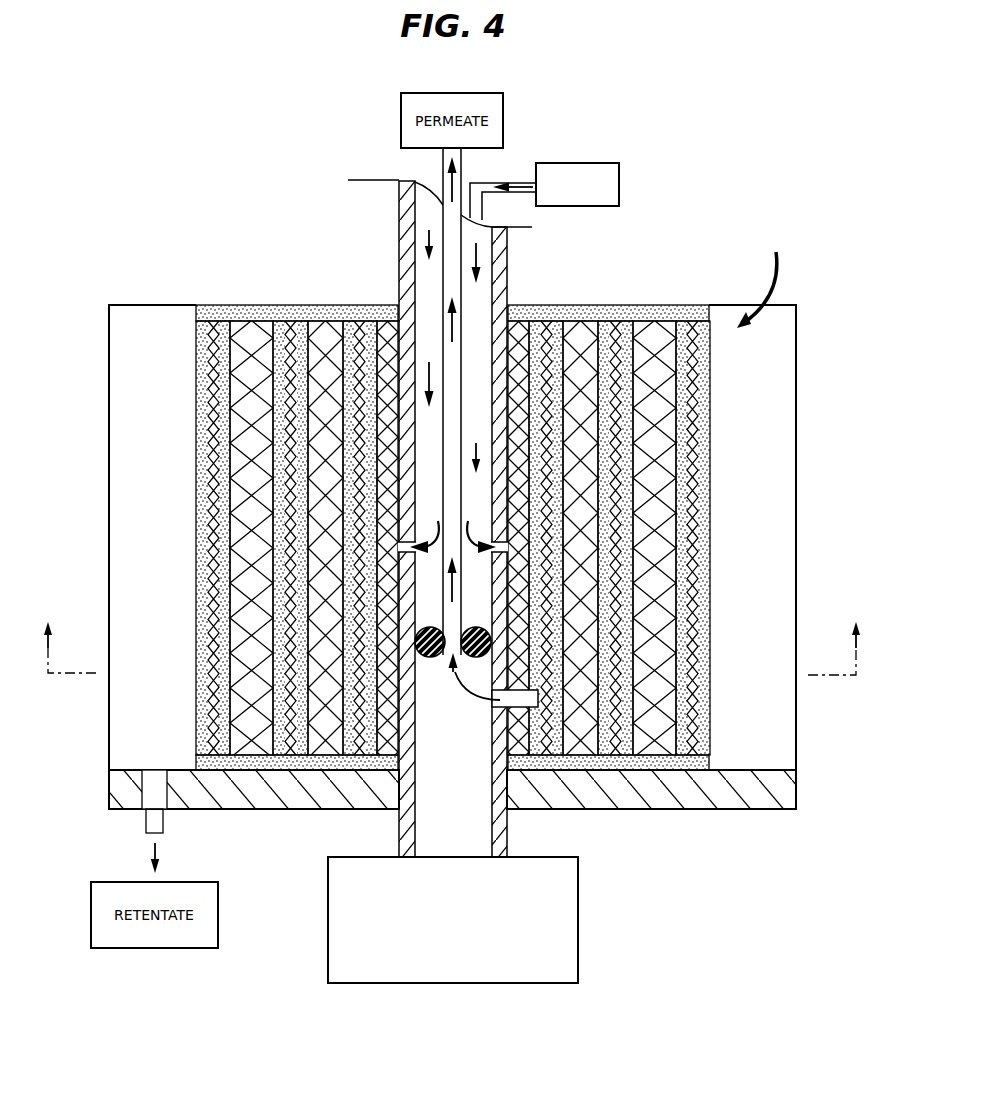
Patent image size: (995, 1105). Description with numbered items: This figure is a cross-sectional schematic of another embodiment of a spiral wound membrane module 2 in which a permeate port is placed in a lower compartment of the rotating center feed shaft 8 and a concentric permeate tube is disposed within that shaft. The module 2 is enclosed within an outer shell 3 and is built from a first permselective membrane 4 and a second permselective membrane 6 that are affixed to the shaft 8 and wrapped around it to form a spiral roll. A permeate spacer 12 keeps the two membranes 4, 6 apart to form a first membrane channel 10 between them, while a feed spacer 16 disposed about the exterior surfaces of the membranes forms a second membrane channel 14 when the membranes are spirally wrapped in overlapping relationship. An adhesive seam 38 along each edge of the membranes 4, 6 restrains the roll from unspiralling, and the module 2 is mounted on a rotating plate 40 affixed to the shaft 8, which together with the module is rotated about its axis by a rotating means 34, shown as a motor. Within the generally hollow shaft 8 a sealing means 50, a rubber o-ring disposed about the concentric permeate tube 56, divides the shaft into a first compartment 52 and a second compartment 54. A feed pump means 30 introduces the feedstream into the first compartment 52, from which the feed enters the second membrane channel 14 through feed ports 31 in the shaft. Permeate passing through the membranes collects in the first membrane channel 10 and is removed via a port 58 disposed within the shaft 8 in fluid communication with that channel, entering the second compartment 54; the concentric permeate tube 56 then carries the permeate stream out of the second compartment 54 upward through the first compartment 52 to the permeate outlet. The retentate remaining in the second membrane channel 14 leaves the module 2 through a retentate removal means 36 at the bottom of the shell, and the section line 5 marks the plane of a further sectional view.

The spiral wound membrane module 2 is at (757, 277).
The outer shell 3 is at (109, 478).
The first permselective membrane 4 is at (196, 542).
The section line 5- 5 is at (452, 638).
The second permselective membrane 6 is at (232, 481).
The center feed shaft 8 is at (398, 228).
The first membrane channel 10 is at (208, 400).
The permeate spacer 12 is at (205, 431).
The second membrane channel 14 is at (245, 335).
The feed spacer 16 is at (257, 617).
The means for introducing a feedstream 30 is at (590, 163).
The feed ports 31 is at (437, 530).
The means for rotating shaft 34 is at (357, 857).
The means for removal of a retentate stream 36 is at (163, 826).
The adhesive seam 38 is at (690, 310).
The rotating plate 40 is at (763, 797).
The sealing means 50 is at (430, 658).
The first compartment 52 is at (467, 423).
The second compartment 54 is at (443, 807).
The concentric permeate tube 56 is at (443, 167).
The port 58 is at (492, 703).